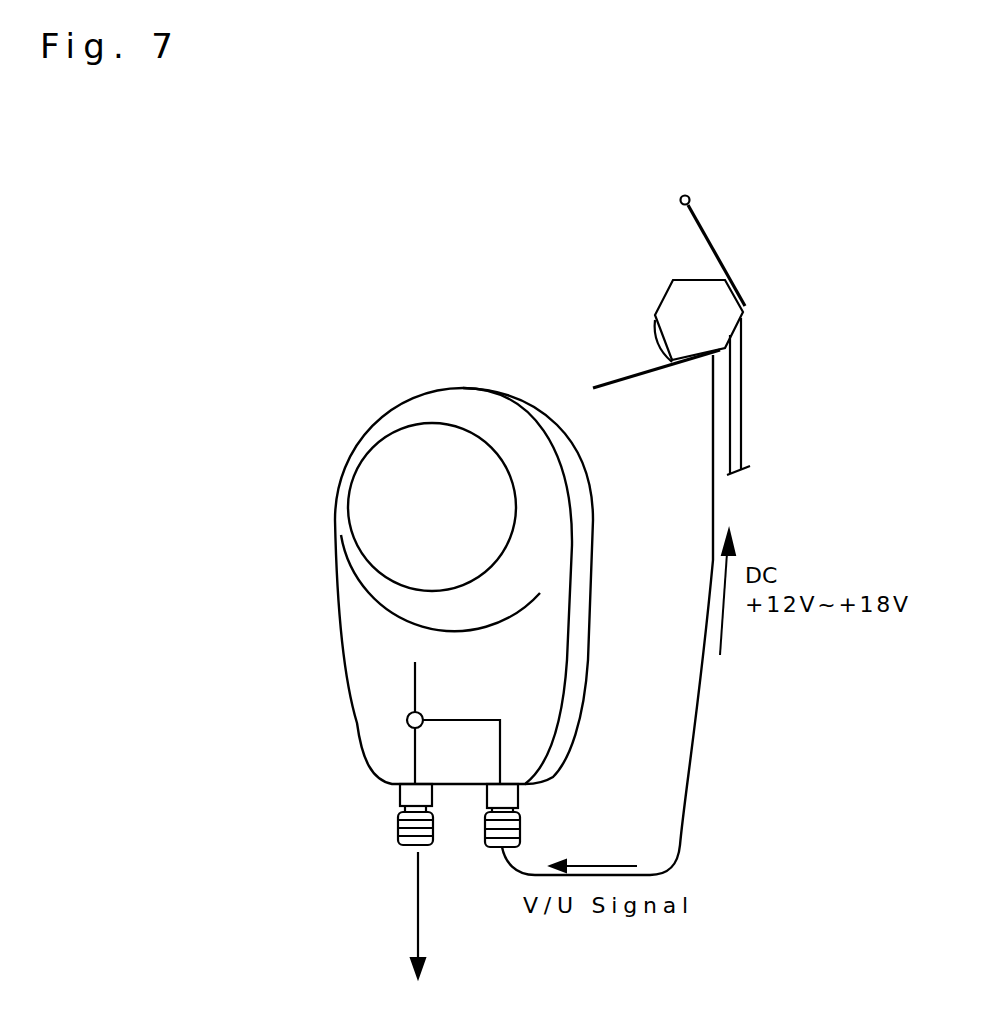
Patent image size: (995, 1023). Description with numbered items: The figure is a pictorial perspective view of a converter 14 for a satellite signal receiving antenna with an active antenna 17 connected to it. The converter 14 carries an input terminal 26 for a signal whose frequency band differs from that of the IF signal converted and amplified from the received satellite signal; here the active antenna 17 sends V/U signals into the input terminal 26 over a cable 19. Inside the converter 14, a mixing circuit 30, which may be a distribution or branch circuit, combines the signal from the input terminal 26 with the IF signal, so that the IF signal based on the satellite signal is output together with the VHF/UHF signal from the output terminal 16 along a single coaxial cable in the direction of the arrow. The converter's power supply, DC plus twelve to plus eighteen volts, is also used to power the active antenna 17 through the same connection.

The converter 14 is at (340, 628).
The output terminal 16 is at (398, 825).
The active antenna 17 is at (728, 252).
The cable 19 is at (697, 753).
The input terminal 26 is at (519, 823).
The mixing circuit 30 is at (407, 717).